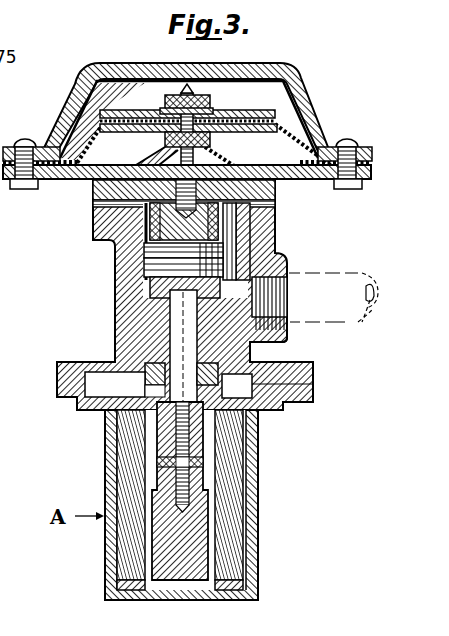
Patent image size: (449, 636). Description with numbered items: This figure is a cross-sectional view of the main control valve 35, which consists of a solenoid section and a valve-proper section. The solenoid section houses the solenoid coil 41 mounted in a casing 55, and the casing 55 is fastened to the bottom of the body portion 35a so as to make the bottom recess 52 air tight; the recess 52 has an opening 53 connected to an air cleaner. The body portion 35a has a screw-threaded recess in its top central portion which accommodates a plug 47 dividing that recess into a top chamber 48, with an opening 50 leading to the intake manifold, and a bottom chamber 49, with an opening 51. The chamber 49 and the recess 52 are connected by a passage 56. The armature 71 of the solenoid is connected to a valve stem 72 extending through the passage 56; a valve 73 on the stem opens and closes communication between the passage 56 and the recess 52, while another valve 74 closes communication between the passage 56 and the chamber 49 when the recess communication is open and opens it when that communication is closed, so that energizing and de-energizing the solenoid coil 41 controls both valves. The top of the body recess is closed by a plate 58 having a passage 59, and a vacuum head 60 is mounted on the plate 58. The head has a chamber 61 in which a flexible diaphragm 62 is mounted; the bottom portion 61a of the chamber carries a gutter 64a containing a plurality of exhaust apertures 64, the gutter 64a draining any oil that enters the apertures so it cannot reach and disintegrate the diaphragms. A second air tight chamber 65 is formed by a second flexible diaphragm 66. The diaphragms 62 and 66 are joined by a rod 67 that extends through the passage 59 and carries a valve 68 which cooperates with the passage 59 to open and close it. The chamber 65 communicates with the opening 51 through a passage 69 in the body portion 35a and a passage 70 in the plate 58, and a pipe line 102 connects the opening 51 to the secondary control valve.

The main control valve 35 is at (68, 352).
The body portion 35a is at (115, 328).
The solenoid coil 41 is at (240, 562).
The plug 47 is at (155, 266).
The top chamber 48 is at (282, 255).
The bottom chamber 49 is at (148, 305).
The opening 50 is at (165, 249).
The opening 51 is at (287, 309).
The recess 52 is at (313, 385).
The opening 53 is at (212, 352).
The casing 55 is at (106, 553).
The passage 56 is at (286, 343).
The plate 58 is at (94, 232).
The passage 59 is at (100, 197).
The vacuum head 60 is at (128, 54).
The chamber 61 is at (152, 82).
The bottom portion 61a is at (305, 143).
The flexible diaphragm 62 is at (279, 152).
The exhaust apertures 64 is at (78, 186).
The gutter 64a is at (60, 124).
The second air tight chamber 65 is at (216, 140).
The flexible diaphragm 66 is at (150, 160).
The rod 67 is at (196, 86).
The valve 68 is at (254, 228).
The passage 69 is at (250, 243).
The passage 70 is at (275, 204).
The armature 71 is at (192, 537).
The valve stem 72 is at (190, 444).
The valve 73 is at (145, 384).
The valve 74 is at (158, 294).
The pipe line 102 is at (360, 330).